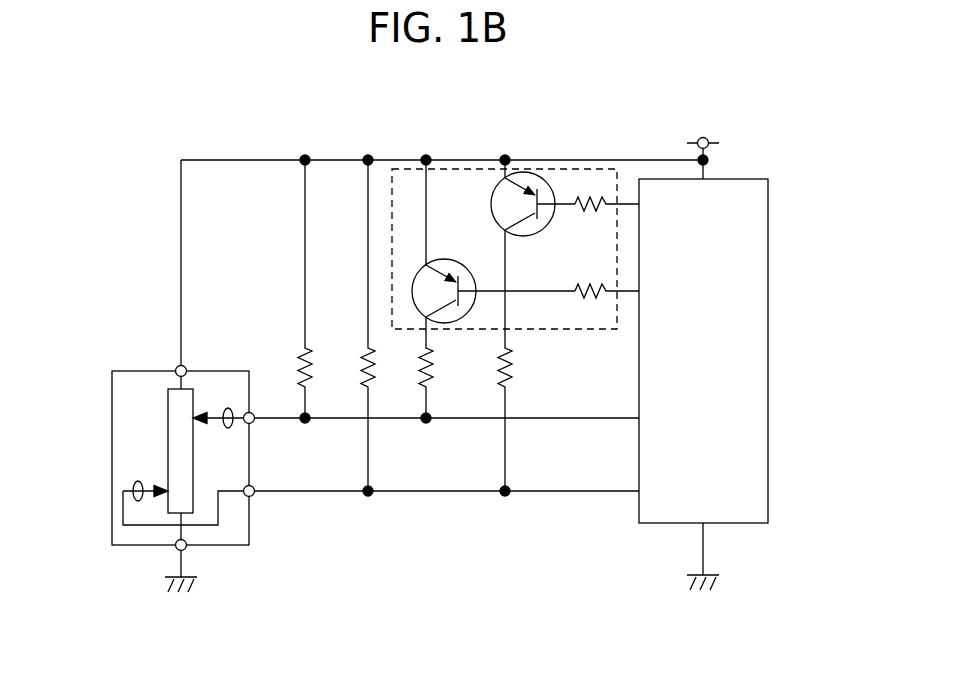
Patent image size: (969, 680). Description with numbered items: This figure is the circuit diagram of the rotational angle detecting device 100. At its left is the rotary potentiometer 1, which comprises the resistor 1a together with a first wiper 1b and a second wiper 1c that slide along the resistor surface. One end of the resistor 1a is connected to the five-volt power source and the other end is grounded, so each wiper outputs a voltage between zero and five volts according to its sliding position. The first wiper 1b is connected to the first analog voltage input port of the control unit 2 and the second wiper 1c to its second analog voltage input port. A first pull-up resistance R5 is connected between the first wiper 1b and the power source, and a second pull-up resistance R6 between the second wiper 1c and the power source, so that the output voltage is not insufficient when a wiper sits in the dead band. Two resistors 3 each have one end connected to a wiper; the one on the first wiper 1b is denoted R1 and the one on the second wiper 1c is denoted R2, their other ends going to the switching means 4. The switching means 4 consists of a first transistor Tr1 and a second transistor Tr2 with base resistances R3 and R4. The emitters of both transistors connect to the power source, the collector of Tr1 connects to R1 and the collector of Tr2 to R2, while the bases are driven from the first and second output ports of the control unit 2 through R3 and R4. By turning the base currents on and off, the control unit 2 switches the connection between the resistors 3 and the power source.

The rotational angle detecting device 100 is at (652, 106).
The potentiometer 1 is at (147, 371).
The resistor 1a is at (172, 405).
The first wiper 1b is at (229, 408).
The second wiper 1c is at (133, 491).
The control unit 2 is at (768, 318).
The resistors 3 is at (430, 386).
The switching means 4 is at (412, 165).
The resistor connected to the first wiper R1 is at (410, 368).
The resistor connected to the second wiper R2 is at (490, 358).
The base resistance R3 is at (607, 218).
The base resistance R4 is at (607, 305).
The first pull-up resistance R5 is at (288, 289).
The second pull-up resistance R6 is at (351, 325).
The first transistor Tr1 is at (533, 213).
The second transistor Tr2 is at (493, 244).